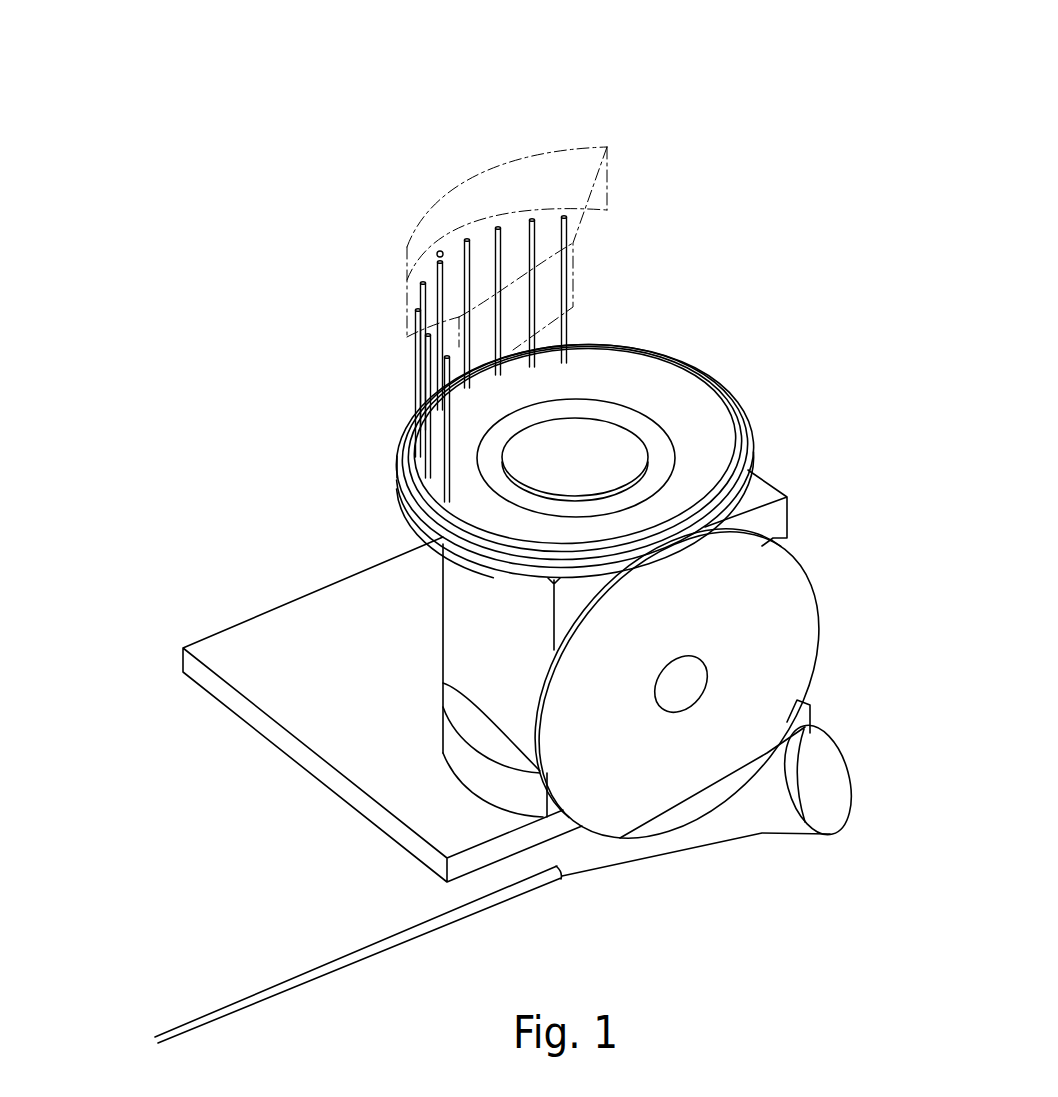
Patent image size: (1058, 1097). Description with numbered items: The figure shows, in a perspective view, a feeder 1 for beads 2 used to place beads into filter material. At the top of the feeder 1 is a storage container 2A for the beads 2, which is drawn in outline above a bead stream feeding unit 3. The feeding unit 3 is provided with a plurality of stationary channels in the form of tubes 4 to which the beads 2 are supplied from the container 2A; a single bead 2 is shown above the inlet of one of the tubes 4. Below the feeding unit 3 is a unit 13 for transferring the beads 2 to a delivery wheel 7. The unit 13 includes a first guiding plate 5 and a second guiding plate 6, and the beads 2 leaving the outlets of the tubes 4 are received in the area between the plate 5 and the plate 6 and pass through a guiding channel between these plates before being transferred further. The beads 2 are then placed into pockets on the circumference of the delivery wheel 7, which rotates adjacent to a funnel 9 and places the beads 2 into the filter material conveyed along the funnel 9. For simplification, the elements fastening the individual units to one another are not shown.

The feeder 1 is at (698, 268).
The beads 2 is at (436, 253).
The storage container 2A is at (573, 157).
The bead stream feeding unit 3 is at (383, 347).
The tubes 4 is at (440, 251).
The first guiding plate 5 is at (405, 500).
The second guiding plate 6 is at (410, 460).
The delivery wheel 7 is at (757, 588).
The funnel 9 is at (757, 815).
The unit for transferring the beads 13 is at (357, 477).